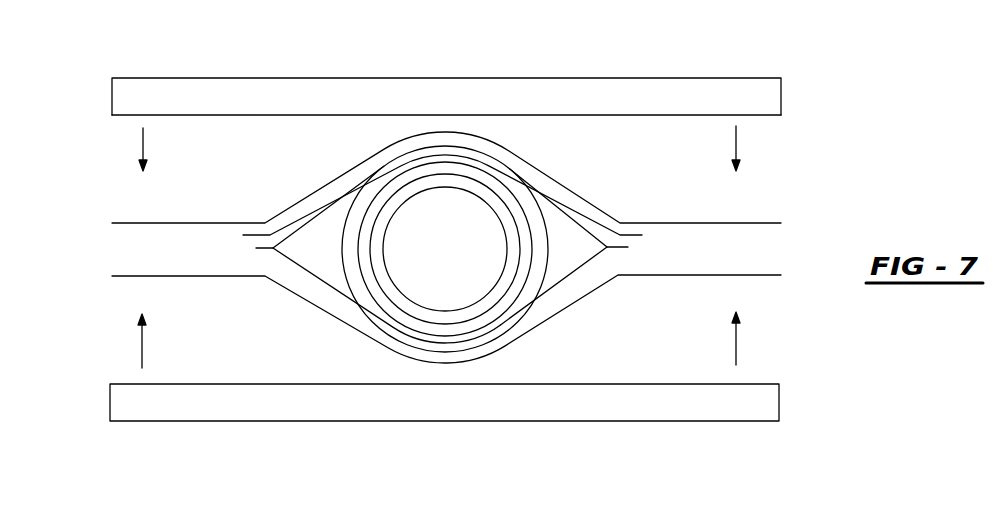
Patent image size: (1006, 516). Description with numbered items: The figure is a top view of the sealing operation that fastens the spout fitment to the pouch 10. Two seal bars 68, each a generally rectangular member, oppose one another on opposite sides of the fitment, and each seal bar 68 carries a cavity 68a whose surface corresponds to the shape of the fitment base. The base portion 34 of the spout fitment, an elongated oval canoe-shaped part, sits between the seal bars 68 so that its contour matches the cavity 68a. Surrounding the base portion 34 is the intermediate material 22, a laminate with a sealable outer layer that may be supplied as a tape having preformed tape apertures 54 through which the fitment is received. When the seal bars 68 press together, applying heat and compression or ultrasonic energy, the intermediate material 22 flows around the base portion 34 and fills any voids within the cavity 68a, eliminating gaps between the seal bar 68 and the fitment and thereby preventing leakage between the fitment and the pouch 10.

The pouch 10 is at (200, 223).
The intermediate material 22 is at (790, 170).
The base portion 34 is at (626, 247).
The tape apertures 54 is at (360, 190).
The seal bar 68 is at (611, 78).
The cavity 68a is at (372, 114).